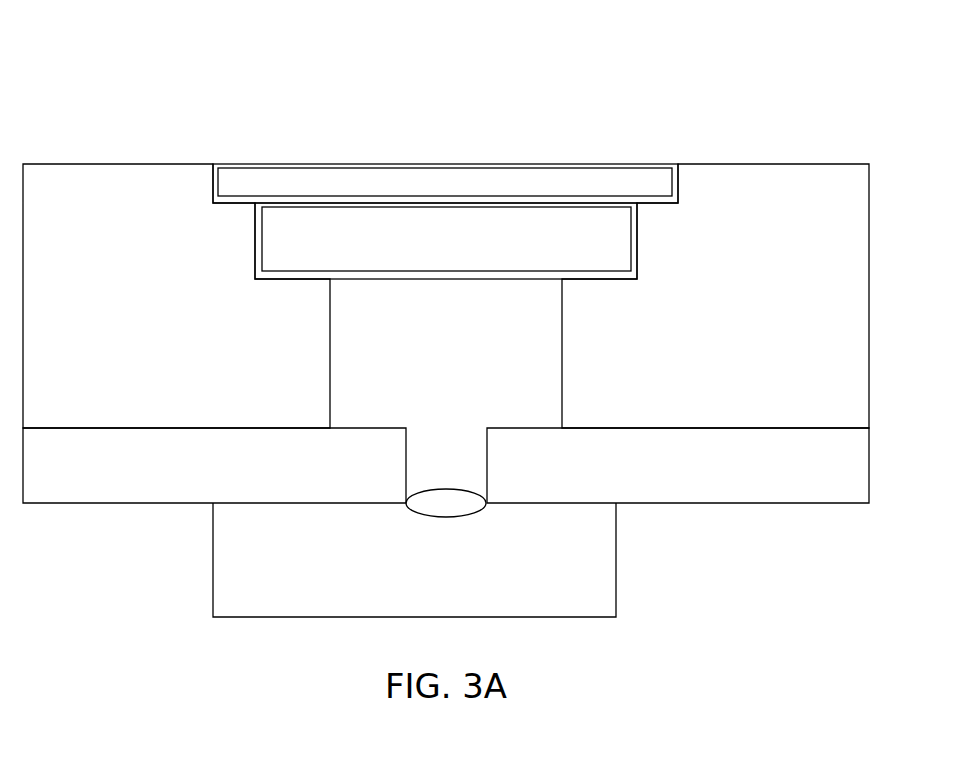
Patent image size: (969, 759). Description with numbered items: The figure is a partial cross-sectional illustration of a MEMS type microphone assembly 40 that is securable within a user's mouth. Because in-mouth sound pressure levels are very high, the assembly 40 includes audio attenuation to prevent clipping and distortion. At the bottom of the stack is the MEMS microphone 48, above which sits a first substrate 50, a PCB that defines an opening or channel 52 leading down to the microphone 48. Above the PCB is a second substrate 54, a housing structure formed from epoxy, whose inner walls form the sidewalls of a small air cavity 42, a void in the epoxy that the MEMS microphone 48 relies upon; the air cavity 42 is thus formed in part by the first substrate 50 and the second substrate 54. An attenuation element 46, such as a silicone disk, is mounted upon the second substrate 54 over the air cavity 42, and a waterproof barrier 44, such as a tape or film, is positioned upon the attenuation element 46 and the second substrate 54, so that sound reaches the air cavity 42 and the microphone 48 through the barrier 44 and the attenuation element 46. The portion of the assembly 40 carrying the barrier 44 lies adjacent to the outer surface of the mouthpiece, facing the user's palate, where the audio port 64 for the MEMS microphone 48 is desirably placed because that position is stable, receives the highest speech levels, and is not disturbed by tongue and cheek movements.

The MEMS type microphone assembly 40 is at (791, 99).
The air cavity 42 is at (353, 400).
The waterproof barrier 44 is at (280, 176).
The attenuation element 46 is at (622, 229).
The MEMS microphone 48 is at (604, 580).
The first substrate 50 is at (806, 497).
The opening or channel 52 is at (467, 468).
The second substrate 54 is at (106, 173).
The audio port 64 is at (450, 86).